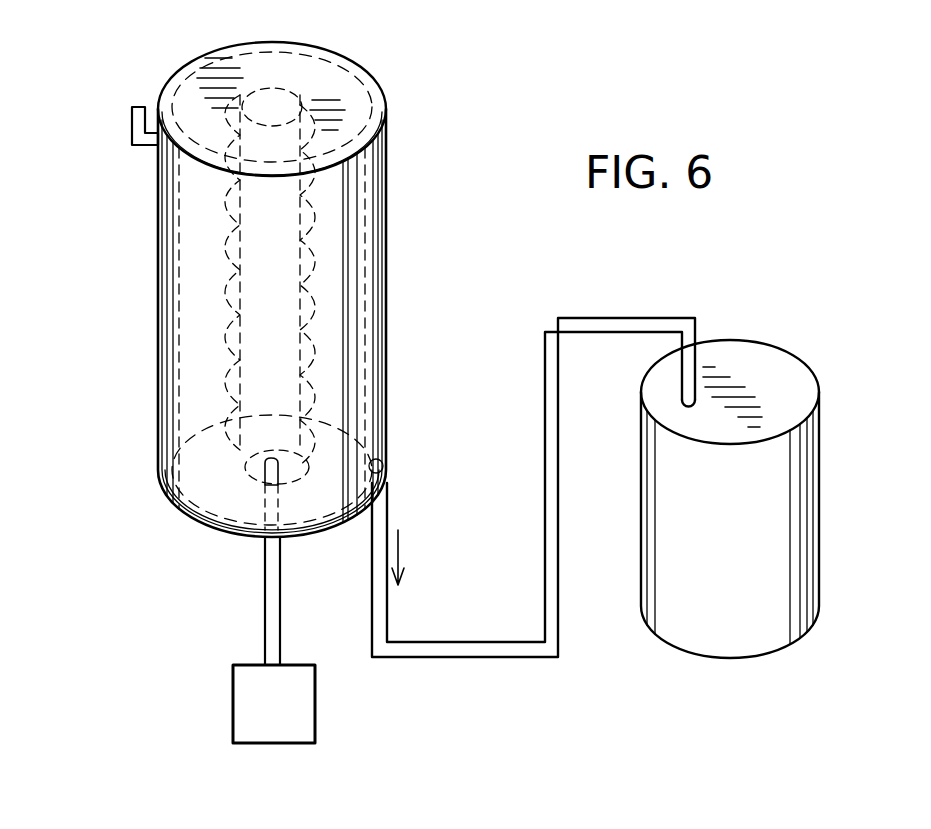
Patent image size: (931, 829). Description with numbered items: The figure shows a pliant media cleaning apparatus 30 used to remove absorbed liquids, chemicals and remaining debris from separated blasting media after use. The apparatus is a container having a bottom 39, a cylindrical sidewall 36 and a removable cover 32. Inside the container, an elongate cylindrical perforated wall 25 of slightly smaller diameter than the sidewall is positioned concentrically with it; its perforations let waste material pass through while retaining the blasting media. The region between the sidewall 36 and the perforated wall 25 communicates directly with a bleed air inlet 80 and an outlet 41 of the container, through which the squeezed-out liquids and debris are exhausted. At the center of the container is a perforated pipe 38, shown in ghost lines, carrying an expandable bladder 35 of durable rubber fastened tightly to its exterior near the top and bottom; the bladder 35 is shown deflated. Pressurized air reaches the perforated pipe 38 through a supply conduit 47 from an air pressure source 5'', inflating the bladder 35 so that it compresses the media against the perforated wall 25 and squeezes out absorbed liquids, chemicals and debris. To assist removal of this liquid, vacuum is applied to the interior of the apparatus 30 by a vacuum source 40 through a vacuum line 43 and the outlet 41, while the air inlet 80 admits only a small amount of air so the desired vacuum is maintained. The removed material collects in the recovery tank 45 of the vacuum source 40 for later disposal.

The pliant media cleaning apparatus 30 is at (279, 392).
The removable cover 32 is at (345, 97).
The expandable bladder 35 is at (225, 288).
The perforated pipe 38 is at (317, 303).
The perforated wall 25 is at (178, 342).
The cylindrical sidewall 36 is at (160, 417).
The bottom 39 is at (192, 495).
The outlet 41 is at (385, 462).
The vacuum line 43 is at (547, 480).
The vacuum source 40 is at (757, 456).
The recovery tank 45 is at (820, 598).
The supply conduit 47 is at (265, 598).
The air pressure source 5'' is at (237, 704).
The bleed air inlet 80 is at (138, 107).